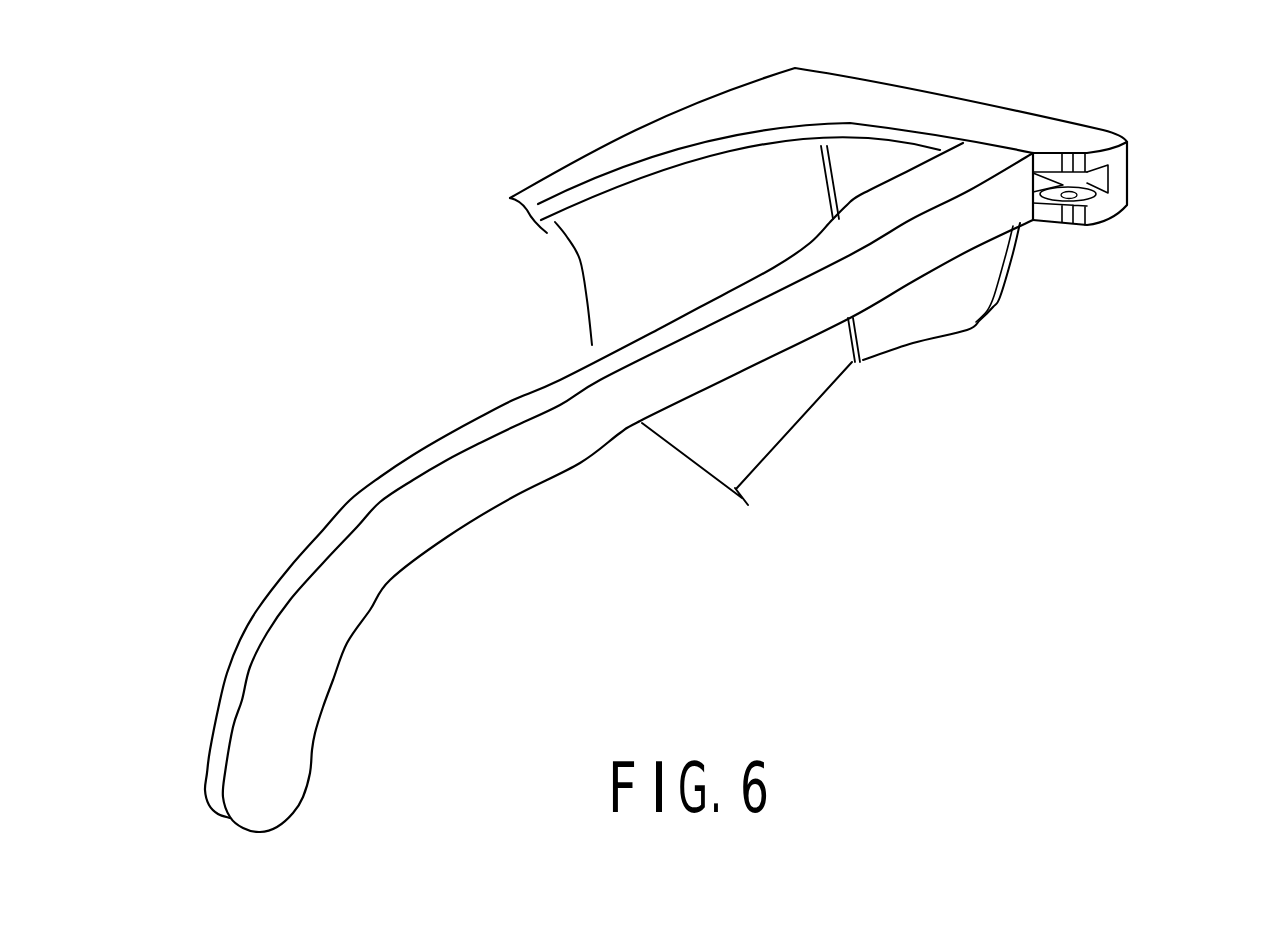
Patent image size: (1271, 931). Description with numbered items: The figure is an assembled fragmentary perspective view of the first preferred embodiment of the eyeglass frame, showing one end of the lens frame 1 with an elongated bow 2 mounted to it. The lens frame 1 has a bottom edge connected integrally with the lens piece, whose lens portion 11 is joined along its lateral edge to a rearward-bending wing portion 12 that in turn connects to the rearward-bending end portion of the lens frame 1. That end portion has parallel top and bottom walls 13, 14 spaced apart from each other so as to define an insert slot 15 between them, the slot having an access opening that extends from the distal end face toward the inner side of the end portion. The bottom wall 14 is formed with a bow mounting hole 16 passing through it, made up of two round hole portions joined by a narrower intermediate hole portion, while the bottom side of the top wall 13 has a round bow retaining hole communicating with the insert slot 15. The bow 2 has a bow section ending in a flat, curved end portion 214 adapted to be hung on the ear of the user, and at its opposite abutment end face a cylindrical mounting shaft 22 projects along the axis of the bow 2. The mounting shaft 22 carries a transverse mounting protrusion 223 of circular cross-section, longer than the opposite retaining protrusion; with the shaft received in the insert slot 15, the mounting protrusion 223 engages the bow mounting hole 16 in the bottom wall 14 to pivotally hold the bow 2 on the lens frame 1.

The lens frame 1 is at (647, 120).
The elongated bow 2 is at (578, 457).
The lens portion 11 is at (742, 422).
The rearward-bending wing portion 12 is at (912, 310).
The top wall 13 is at (1125, 179).
The bottom wall 14 is at (1087, 217).
The insert slot 15 is at (1100, 177).
The bow mounting hole 16 is at (1089, 213).
The mounting shaft 22 is at (1045, 180).
The mounting protrusion 223 is at (1050, 202).
The curved end portion 214 is at (277, 740).